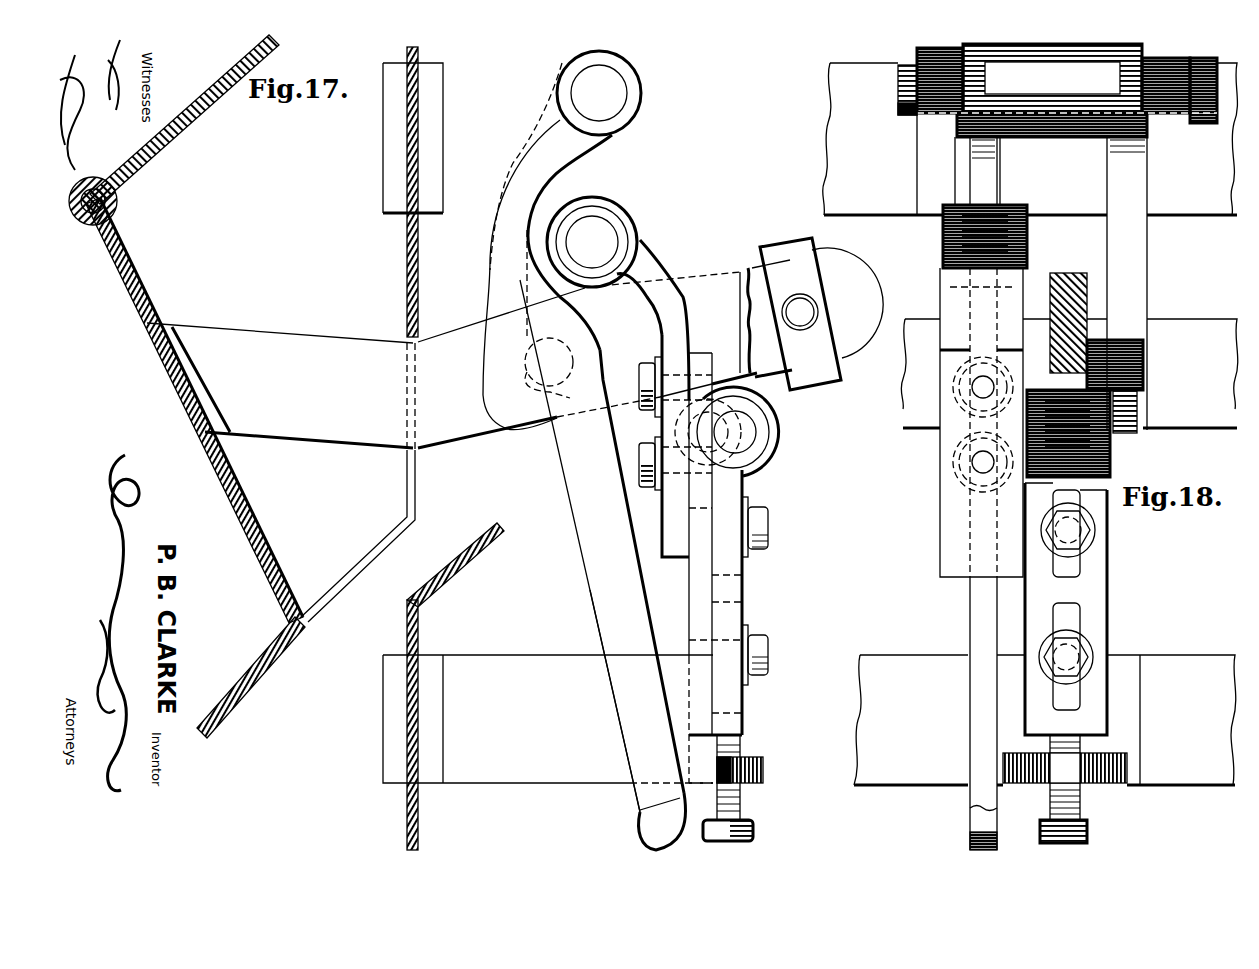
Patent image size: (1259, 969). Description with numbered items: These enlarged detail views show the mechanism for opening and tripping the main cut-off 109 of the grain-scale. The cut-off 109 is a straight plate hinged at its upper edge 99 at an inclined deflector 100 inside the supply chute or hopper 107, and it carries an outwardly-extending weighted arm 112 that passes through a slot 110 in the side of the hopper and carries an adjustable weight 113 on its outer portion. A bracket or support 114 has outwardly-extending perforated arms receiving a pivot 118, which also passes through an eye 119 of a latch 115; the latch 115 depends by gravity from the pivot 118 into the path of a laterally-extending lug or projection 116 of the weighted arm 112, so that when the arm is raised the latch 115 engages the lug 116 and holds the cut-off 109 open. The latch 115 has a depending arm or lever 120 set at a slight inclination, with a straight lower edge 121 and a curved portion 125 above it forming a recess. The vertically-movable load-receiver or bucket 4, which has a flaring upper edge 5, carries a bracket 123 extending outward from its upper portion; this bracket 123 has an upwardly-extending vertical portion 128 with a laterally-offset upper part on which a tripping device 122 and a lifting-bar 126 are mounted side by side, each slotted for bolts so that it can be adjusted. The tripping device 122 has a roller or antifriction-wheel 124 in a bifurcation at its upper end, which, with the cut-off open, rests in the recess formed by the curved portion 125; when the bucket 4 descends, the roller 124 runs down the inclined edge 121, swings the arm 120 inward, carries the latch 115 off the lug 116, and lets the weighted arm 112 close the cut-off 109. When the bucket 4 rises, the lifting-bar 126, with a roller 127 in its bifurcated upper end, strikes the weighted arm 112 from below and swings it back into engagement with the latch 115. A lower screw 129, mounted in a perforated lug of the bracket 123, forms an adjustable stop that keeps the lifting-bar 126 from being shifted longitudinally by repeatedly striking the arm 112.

In FIG. 17, the load-receiver or bucket 4 is at (418, 812).
In FIG. 17, the flaring upper edge 5 is at (470, 540).
In FIG. 17, the upper edges of the main cut-offs 99 is at (108, 216).
In FIG. 17, the inclined deflector 100 is at (170, 145).
In FIG. 17, the supply chute or hopper 107 is at (268, 670).
In FIG. 17, the main cut-off 109 is at (232, 478).
In FIG. 17, the slot 110 is at (417, 456).
In FIG. 17, the weighted arm 112 is at (365, 348).
In FIG. 18, the weighted arm 112 is at (1072, 275).
In FIG. 17, the adjustable weight 113 is at (785, 248).
In FIG. 17, the bracket or support 114 is at (442, 138).
In FIG. 18, the bracket or support 114 is at (910, 200).
In FIG. 17, the latch 115 is at (488, 305).
In FIG. 18, the latch 115 is at (1130, 270).
In FIG. 17, the lug or projection 116 is at (520, 392).
In FIG. 18, the lug or projection 116 is at (1147, 365).
In FIG. 17, the pivot 118 is at (617, 100).
In FIG. 18, the pivot 118 is at (898, 118).
In FIG. 17, the eye 119 is at (526, 166).
In FIG. 18, the eye 119 is at (1067, 90).
In FIG. 17, the arm or lever 120 is at (590, 568).
In FIG. 18, the arm or lever 120 is at (975, 616).
In FIG. 17, the straight lower edge 121 is at (645, 598).
In FIG. 17, the tripping device 122 is at (744, 614).
In FIG. 18, the tripping device 122 is at (1092, 613).
In FIG. 17, the bracket 123 is at (548, 719).
In FIG. 18, the bracket 123 is at (875, 707).
In FIG. 17, the roller or antifriction-wheel 124 is at (640, 222).
In FIG. 18, the roller or antifriction-wheel 124 is at (1000, 205).
In FIG. 17, the curved portion 125 is at (485, 236).
In FIG. 18, the curved portion 125 is at (993, 178).
In FIG. 17, the lifting-bar 126 is at (742, 472).
In FIG. 18, the lifting-bar 126 is at (1098, 545).
In FIG. 17, the roller 127 is at (778, 430).
In FIG. 18, the roller 127 is at (1112, 467).
In FIG. 17, the upwardly-extending vertical portion 128 is at (705, 566).
In FIG. 18, the upwardly-extending vertical portion 128 is at (1103, 625).
In FIG. 17, the lower screw 129 is at (745, 812).
In FIG. 18, the lower screw 129 is at (1085, 812).